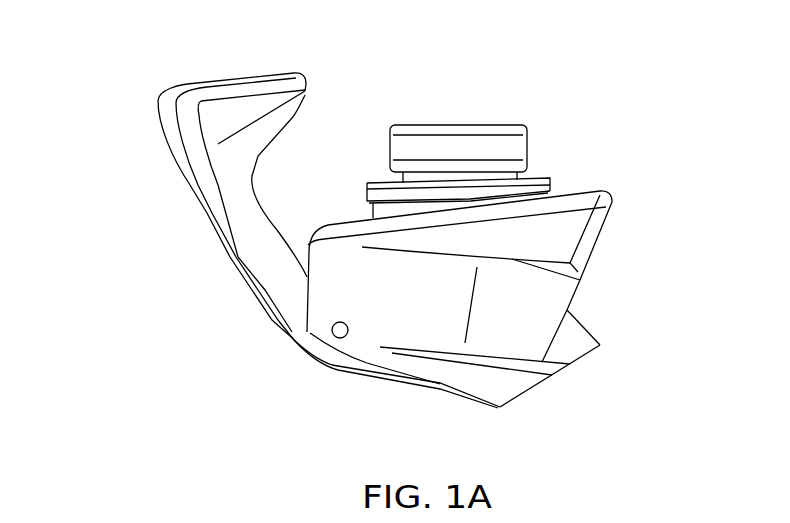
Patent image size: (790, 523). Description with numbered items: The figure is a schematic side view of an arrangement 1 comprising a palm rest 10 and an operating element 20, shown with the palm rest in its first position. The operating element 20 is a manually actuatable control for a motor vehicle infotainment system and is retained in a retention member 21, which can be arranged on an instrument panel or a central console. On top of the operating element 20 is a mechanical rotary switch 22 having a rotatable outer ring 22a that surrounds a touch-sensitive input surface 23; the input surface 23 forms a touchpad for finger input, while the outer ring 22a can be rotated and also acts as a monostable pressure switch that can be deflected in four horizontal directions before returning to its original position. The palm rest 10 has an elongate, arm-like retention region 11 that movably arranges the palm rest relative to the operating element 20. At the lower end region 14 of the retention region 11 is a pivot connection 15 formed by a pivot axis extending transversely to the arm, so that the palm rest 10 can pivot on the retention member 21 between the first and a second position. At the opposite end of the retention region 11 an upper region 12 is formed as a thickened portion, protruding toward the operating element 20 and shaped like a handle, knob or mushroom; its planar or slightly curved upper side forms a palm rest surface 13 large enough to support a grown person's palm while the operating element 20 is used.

The arrangement 1 is at (479, 34).
The palm rest 10 is at (143, 152).
The retention region 11 is at (256, 239).
The upper region 12 is at (223, 92).
The palm rest surface 13 is at (228, 72).
The lower end region 14 is at (328, 358).
The pivot connection 15 is at (332, 330).
The operating element 20 is at (622, 97).
The retention member 21 is at (547, 243).
The mechanical rotary switch 22 is at (513, 146).
The rotatable outer ring 22a is at (528, 137).
The touch-sensitive input surface 23 is at (458, 115).